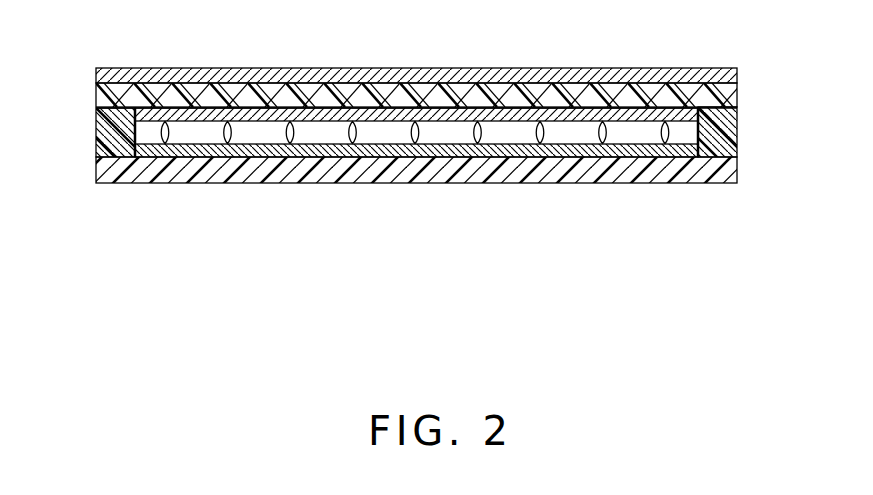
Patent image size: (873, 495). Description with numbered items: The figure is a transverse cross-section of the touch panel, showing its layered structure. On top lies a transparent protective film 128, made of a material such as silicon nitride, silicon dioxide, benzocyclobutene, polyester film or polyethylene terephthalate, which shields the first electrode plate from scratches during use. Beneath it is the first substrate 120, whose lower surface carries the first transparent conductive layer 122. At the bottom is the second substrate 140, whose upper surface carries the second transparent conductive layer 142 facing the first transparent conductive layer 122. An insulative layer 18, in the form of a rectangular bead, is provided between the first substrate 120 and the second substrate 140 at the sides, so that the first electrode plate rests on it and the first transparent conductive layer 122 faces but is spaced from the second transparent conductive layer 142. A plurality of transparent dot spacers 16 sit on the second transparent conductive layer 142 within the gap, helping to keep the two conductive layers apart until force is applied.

The transparent protective film 128 is at (722, 76).
The first substrate 120 is at (731, 93).
The insulative layer 18 is at (113, 123).
The first transparent conductive layer 122 is at (430, 113).
The transparent dot spacers 16 is at (543, 132).
The second transparent conductive layer 142 is at (268, 156).
The second substrate 140 is at (722, 172).